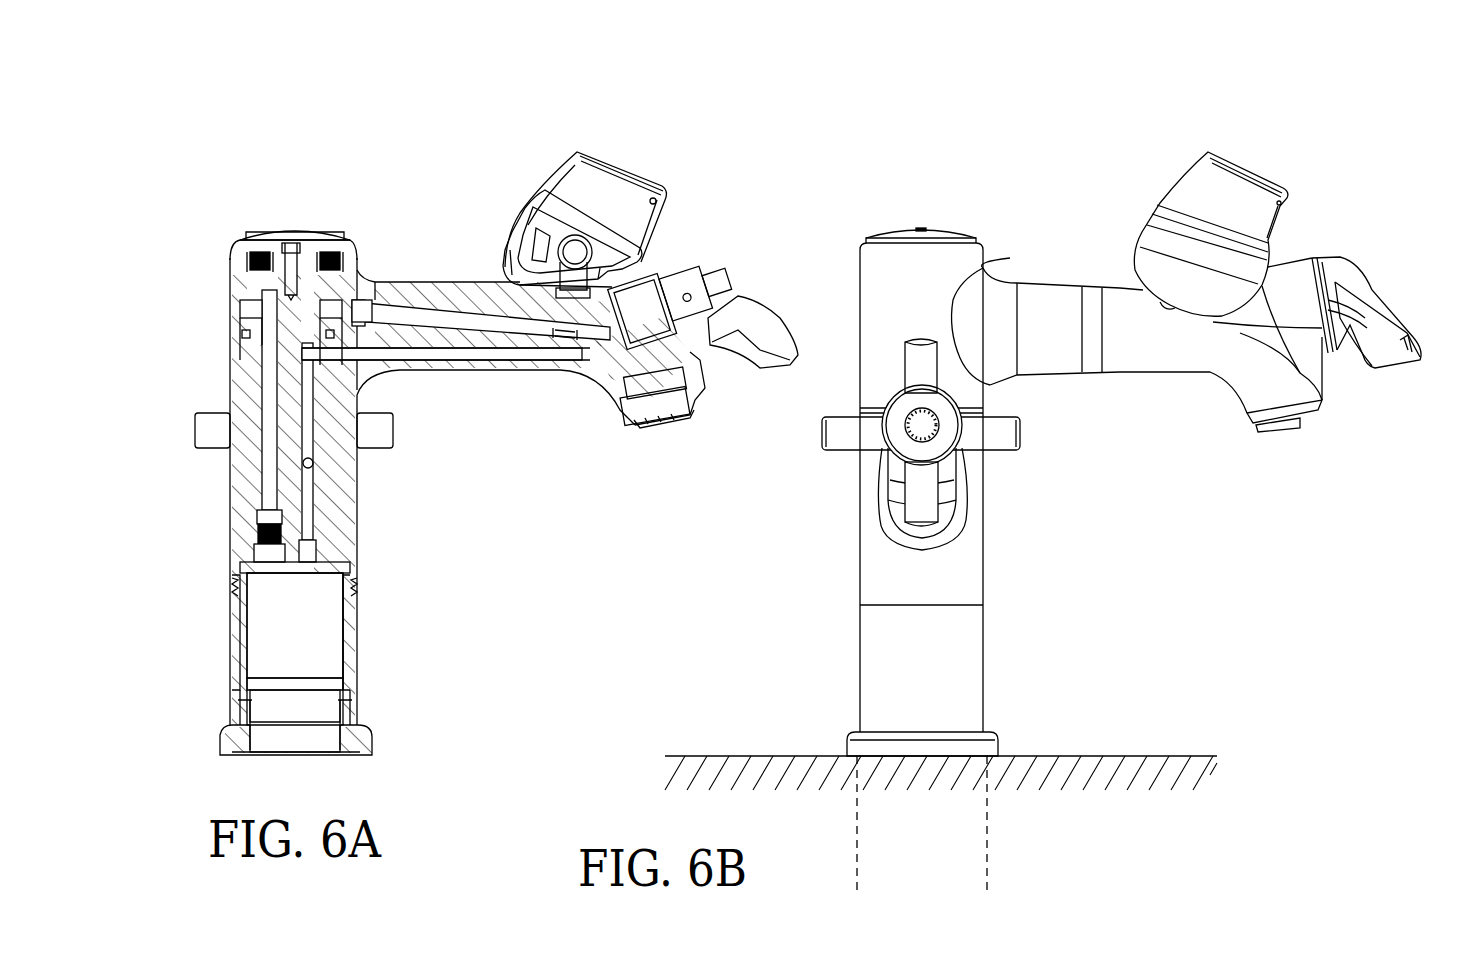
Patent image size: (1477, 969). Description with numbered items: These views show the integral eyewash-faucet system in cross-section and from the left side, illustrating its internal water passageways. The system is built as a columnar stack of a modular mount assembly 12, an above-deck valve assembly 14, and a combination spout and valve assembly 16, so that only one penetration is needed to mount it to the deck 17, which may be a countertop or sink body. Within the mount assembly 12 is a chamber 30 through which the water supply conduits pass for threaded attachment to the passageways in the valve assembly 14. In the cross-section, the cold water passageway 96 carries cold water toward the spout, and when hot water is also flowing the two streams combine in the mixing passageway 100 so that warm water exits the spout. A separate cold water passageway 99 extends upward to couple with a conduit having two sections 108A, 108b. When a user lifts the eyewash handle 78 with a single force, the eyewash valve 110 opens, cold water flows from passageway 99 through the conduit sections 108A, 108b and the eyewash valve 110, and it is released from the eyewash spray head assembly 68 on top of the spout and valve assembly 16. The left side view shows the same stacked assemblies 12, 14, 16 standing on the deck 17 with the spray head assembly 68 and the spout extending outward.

In FIG. 6B, the modular mount assembly 12 is at (1053, 440).
In FIG. 6B, the above-deck valve assembly 14 is at (805, 510).
In FIG. 6B, the combination spout and valve assembly 16 is at (852, 198).
In FIG. 6B, the deck 17 is at (1110, 755).
In FIG. 6A, the chamber 30 is at (310, 641).
In FIG. 6A, the eyewash spray head assembly 68 is at (563, 162).
In FIG. 6A, the eyewash handle 78 is at (762, 372).
In FIG. 6A, the cold water passageway 96 is at (307, 500).
In FIG. 6A, the cold water passageway 99 is at (265, 462).
In FIG. 6A, the mixing passageway 100 is at (308, 410).
In FIG. 6A, the conduit section 108A is at (385, 310).
In FIG. 6A, the conduit section 108b is at (593, 305).
In FIG. 6A, the eyewash valve 110 is at (637, 298).